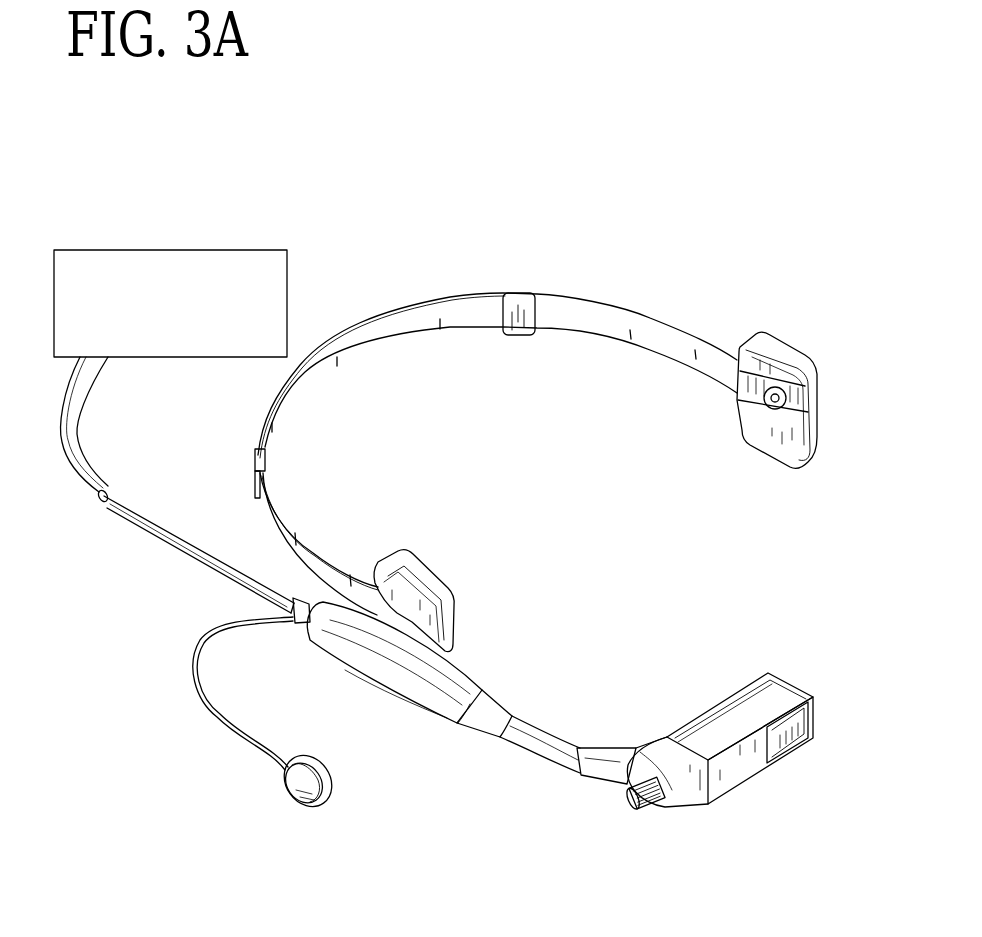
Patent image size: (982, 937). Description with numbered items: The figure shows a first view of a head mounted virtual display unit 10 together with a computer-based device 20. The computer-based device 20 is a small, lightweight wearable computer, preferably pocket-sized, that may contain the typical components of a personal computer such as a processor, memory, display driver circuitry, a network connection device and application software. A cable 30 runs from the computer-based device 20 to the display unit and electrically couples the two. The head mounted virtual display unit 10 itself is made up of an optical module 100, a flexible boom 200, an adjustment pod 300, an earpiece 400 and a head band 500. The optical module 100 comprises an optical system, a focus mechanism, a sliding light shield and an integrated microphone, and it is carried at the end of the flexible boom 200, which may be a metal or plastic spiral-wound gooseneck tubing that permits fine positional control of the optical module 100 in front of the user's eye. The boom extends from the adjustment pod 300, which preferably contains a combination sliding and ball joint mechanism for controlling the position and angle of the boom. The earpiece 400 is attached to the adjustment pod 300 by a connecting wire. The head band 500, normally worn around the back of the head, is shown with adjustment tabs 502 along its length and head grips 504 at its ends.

The head mounted virtual display unit 10 is at (670, 165).
The computer-based device 20 is at (195, 250).
The cable 30 is at (168, 543).
The optical module 100 is at (722, 773).
The flexible boom 200 is at (540, 757).
The adjustment pod 300 is at (387, 670).
The earpiece 400 is at (288, 787).
The head band 500 is at (300, 555).
The adjustment tabs 502 is at (517, 292).
The head grips 504 is at (817, 377).